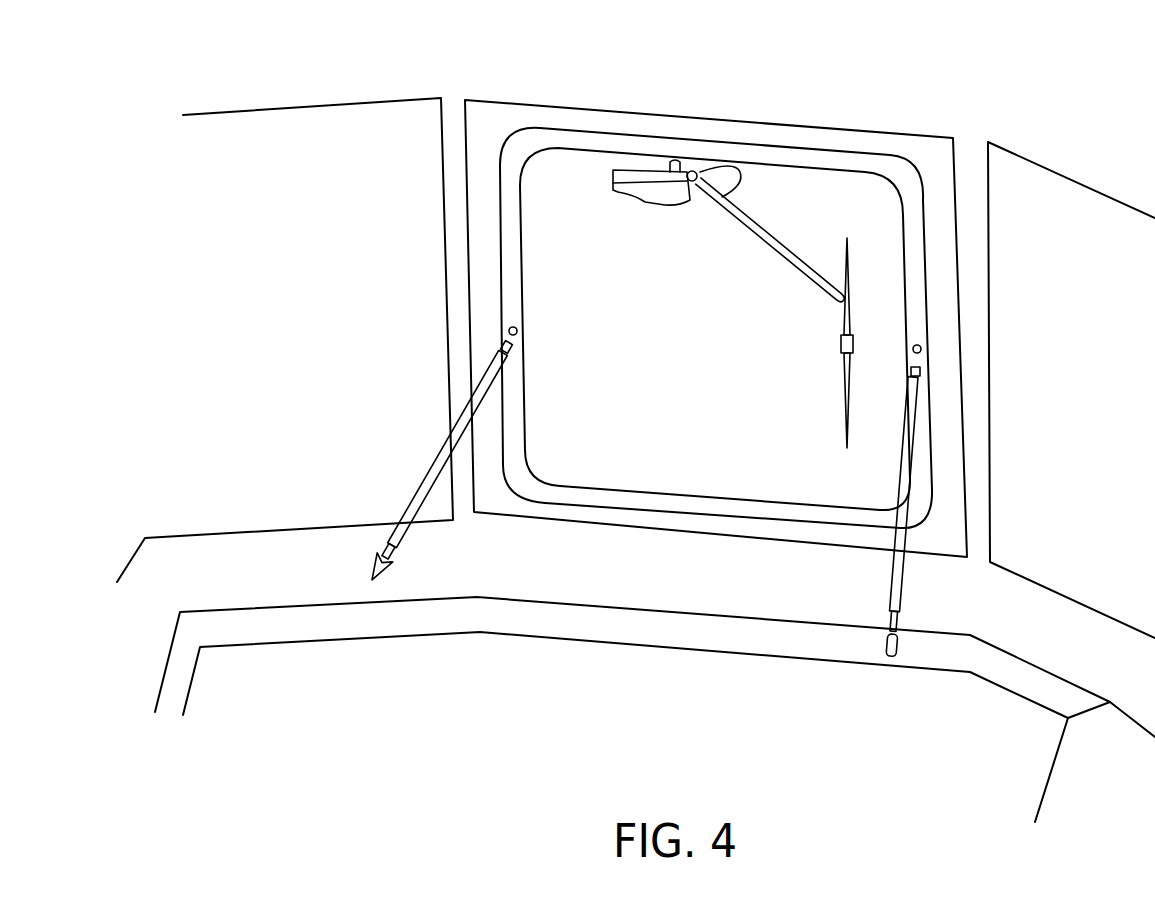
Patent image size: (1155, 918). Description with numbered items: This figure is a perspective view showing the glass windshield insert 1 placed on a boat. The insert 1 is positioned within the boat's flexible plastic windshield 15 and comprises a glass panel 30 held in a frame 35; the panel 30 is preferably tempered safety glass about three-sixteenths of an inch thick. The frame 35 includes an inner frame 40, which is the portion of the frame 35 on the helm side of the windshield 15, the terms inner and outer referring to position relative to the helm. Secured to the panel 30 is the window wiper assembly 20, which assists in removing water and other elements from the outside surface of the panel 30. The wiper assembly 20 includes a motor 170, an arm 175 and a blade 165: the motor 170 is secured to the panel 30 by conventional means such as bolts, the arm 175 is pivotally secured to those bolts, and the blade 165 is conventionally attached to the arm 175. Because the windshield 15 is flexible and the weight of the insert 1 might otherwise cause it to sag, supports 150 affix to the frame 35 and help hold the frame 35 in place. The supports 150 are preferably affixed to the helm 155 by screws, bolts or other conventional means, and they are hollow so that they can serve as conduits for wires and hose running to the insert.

The glass windshield insert 1 is at (790, 123).
The flexible plastic windshield 15 is at (928, 155).
The window wiper assembly 20 is at (628, 170).
The glass panel 30 is at (540, 192).
The frame 35 is at (925, 233).
The inner frame 40 is at (920, 297).
The supports 150 is at (430, 467).
The helm 155 is at (973, 653).
The blade 165 is at (840, 360).
The motor 170 is at (633, 198).
The arm 175 is at (772, 250).